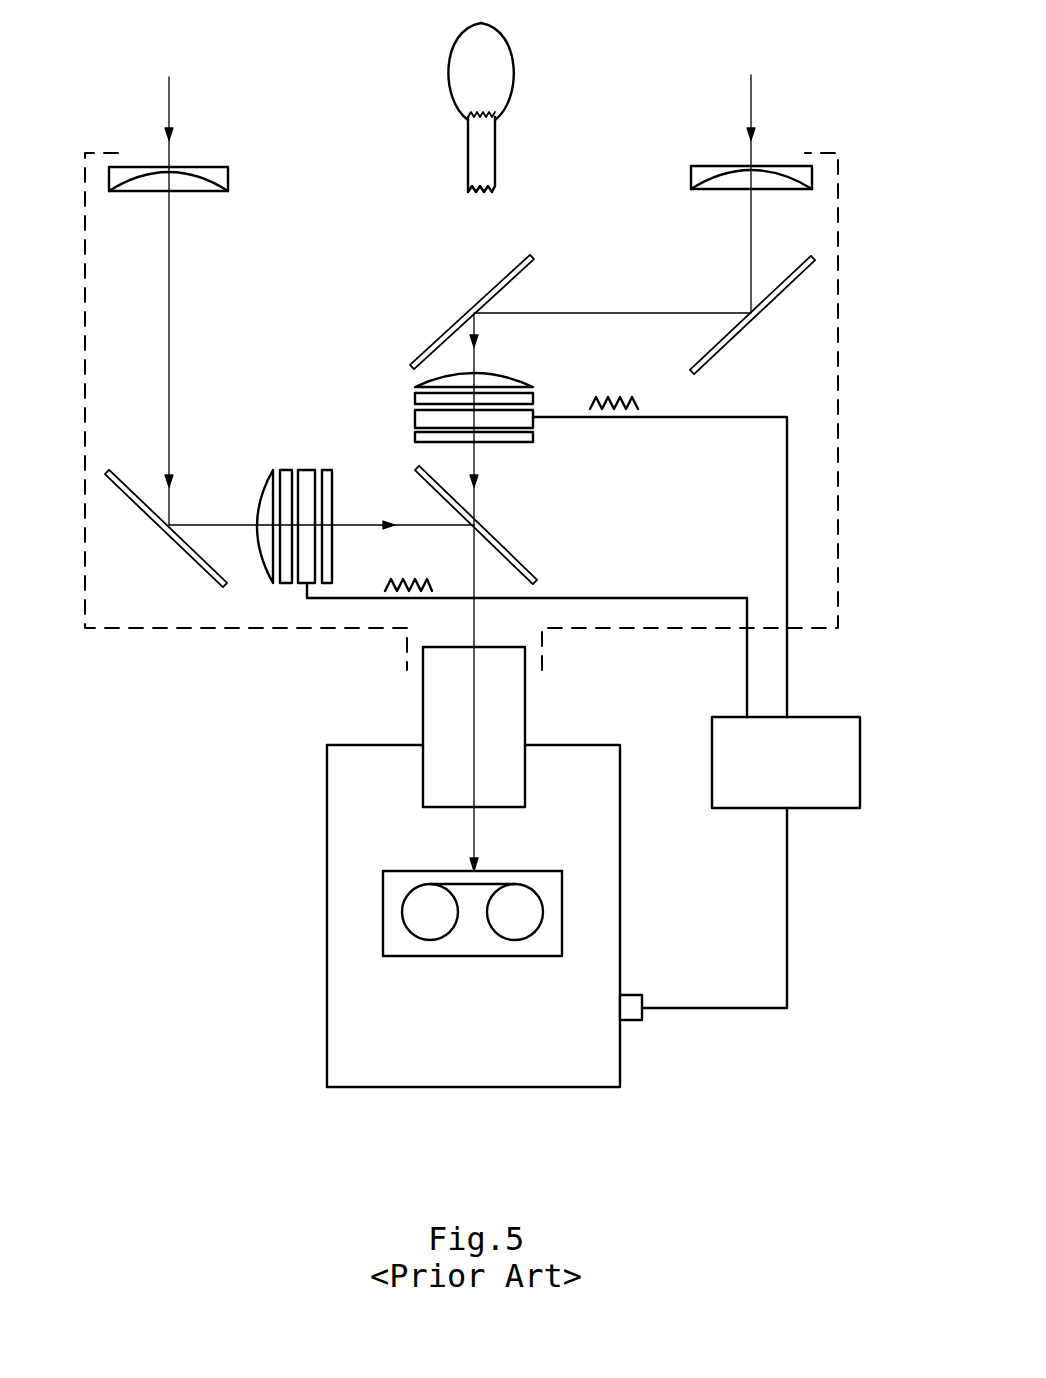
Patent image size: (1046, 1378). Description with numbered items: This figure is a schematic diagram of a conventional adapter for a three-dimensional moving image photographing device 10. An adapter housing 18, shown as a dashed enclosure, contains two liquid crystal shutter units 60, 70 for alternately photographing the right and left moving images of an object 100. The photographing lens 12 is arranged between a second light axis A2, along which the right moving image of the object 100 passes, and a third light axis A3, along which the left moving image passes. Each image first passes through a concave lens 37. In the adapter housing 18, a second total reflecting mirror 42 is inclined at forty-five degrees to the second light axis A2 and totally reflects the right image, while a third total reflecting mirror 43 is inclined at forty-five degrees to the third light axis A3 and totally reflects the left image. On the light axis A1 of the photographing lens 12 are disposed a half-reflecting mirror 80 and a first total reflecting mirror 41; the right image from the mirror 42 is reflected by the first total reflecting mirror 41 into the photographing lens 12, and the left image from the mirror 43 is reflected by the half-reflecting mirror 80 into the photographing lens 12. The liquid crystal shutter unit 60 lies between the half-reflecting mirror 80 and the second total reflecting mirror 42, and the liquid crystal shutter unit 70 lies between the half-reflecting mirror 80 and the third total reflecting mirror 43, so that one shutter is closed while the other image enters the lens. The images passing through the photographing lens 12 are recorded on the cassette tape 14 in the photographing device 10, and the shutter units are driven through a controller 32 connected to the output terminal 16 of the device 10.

The three-dimensional moving image photographing device 10 is at (327, 827).
The photographing lens 12 is at (423, 705).
The cassette tape 14 is at (443, 957).
The output terminal 16 is at (635, 1010).
The adapter housing 18 is at (839, 232).
The controller 32 is at (860, 758).
The concave lens 37 is at (228, 176).
The first total reflecting mirror 41 is at (500, 280).
The second total reflecting mirror 42 is at (733, 338).
The third total reflecting mirror 43 is at (180, 547).
The liquid crystal shutter unit 60 is at (532, 372).
The liquid crystal shutter unit 70 is at (272, 458).
The half-reflecting mirror 80 is at (513, 552).
The object 100 is at (513, 65).
The light axis of the photographing lens A1 is at (475, 460).
The second light axis A2 is at (751, 100).
The third light axis A3 is at (169, 100).